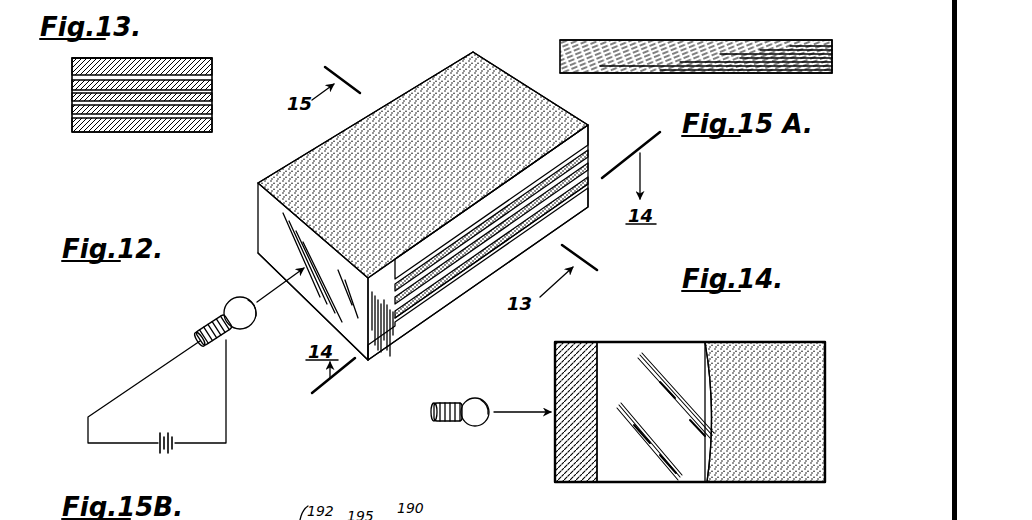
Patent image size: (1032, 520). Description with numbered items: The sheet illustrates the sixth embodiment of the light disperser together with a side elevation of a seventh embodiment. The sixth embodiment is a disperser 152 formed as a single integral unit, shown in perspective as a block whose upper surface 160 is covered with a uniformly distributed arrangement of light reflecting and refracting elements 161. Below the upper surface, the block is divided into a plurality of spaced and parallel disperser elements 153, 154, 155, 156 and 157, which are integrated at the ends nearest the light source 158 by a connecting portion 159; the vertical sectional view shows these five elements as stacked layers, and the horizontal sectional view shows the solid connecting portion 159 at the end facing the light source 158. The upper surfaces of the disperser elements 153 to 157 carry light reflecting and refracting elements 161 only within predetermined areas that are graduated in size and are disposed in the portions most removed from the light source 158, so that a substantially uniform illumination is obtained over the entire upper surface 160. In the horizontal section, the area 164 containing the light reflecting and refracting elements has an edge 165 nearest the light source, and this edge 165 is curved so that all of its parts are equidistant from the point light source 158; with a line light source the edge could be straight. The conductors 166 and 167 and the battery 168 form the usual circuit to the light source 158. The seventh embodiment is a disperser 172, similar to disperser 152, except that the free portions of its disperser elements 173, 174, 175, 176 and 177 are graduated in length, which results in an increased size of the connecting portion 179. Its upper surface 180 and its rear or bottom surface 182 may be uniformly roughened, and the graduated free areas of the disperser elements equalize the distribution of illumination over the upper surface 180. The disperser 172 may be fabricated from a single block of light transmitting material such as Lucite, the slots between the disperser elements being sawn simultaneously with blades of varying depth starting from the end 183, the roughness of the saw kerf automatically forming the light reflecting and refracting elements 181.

In FIG. 13, the disperser 152 is at (214, 56).
In FIG. 12, the disperser 152 is at (255, 209).
In FIG. 14, the disperser 152 is at (716, 310).
In FIG. 13, the disperser element 153 is at (208, 68).
In FIG. 12, the disperser element 153 is at (590, 140).
In FIG. 13, the disperser element 154 is at (208, 86).
In FIG. 12, the disperser element 154 is at (590, 153).
In FIG. 13, the disperser element 155 is at (205, 98).
In FIG. 12, the disperser element 155 is at (590, 166).
In FIG. 13, the disperser element 156 is at (212, 114).
In FIG. 12, the disperser element 156 is at (580, 202).
In FIG. 13, the disperser element 157 is at (208, 128).
In FIG. 12, the disperser element 157 is at (462, 292).
In FIG. 14, the disperser element 157 is at (645, 322).
In FIG. 12, the light source 158 is at (228, 306).
In FIG. 14, the light source 158 is at (480, 427).
In FIG. 12, the connecting portion 159 is at (380, 335).
In FIG. 14, the connecting portion 159 is at (560, 468).
In FIG. 13, the upper surface 160 is at (88, 58).
In FIG. 12, the upper surface 160 is at (410, 93).
In FIG. 12, the light reflecting and refracting elements 161 is at (545, 111).
In FIG. 14, the light reflecting and refracting elements 161 is at (786, 354).
In FIG. 12, the area 164 is at (525, 232).
In FIG. 14, the area 164 is at (785, 468).
In FIG. 14, the edge 165 is at (709, 448).
In FIG. 12, the conductor 166 is at (135, 381).
In FIG. 12, the conductor 167 is at (227, 405).
In FIG. 12, the battery 168 is at (168, 455).
In FIG. 15A, the disperser 172 is at (557, 52).
In FIG. 15A, the disperser element 173 is at (832, 40).
In FIG. 15A, the disperser element 174 is at (796, 58).
In FIG. 15A, the disperser element 175 is at (794, 62).
In FIG. 15A, the disperser element 176 is at (722, 67).
In FIG. 15A, the disperser element 177 is at (686, 73).
In FIG. 15A, the connecting portion 179 is at (582, 57).
In FIG. 15A, the upper surface 180 is at (740, 40).
In FIG. 15A, the light reflecting and refracting elements 181 is at (764, 62).
In FIG. 15A, the rear or bottom surface 182 is at (655, 73).
In FIG. 15A, the end 183 is at (832, 73).